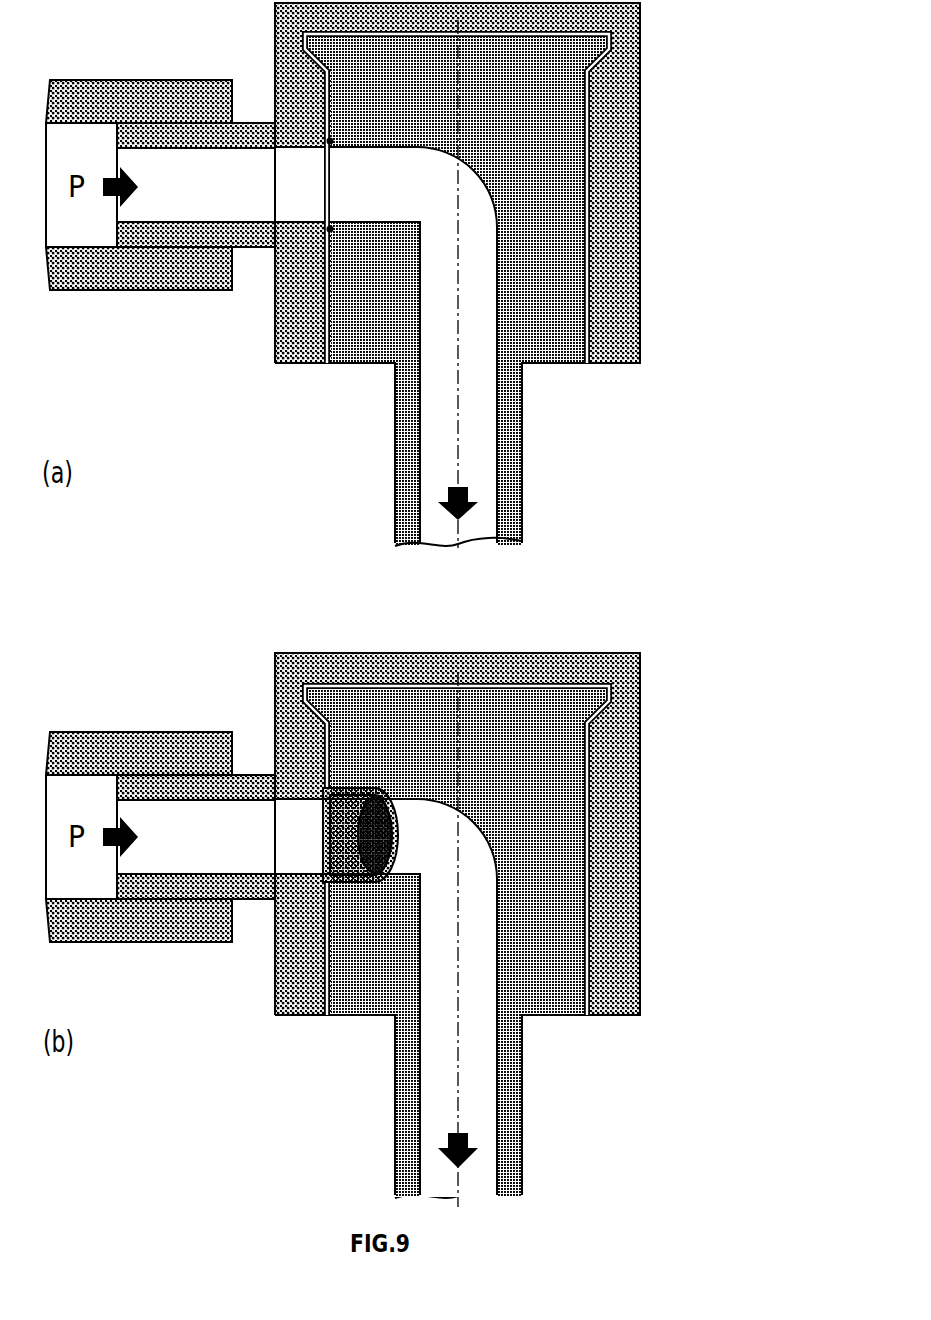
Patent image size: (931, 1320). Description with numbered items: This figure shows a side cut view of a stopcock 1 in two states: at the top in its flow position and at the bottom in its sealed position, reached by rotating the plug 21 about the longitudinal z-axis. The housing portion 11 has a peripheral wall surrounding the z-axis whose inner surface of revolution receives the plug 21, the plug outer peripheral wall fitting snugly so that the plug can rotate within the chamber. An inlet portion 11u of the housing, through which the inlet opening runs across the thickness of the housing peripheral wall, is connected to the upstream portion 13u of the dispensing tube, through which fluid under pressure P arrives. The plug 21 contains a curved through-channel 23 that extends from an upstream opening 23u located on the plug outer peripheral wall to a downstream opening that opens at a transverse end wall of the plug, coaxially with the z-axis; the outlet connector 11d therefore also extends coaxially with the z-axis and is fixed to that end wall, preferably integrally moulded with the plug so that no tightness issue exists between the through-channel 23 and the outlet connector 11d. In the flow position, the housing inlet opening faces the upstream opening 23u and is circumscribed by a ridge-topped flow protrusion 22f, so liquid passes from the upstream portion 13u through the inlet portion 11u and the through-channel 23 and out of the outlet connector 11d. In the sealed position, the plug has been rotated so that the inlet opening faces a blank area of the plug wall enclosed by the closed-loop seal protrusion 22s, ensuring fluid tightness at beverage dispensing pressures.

The stopcock 1 is at (237, 475).
The housing portion 11 is at (457, 600).
The upstream pipe portion 11u is at (243, 250).
The outlet connector 11d is at (522, 508).
The upstream portion of the dispensing tube 13u is at (90, 293).
The plug 21 is at (553, 365).
The flow protrusion 22f is at (325, 228).
The seal protrusion 22s is at (400, 810).
The through-channel 23 is at (483, 224).
The upstream opening 23u is at (372, 791).